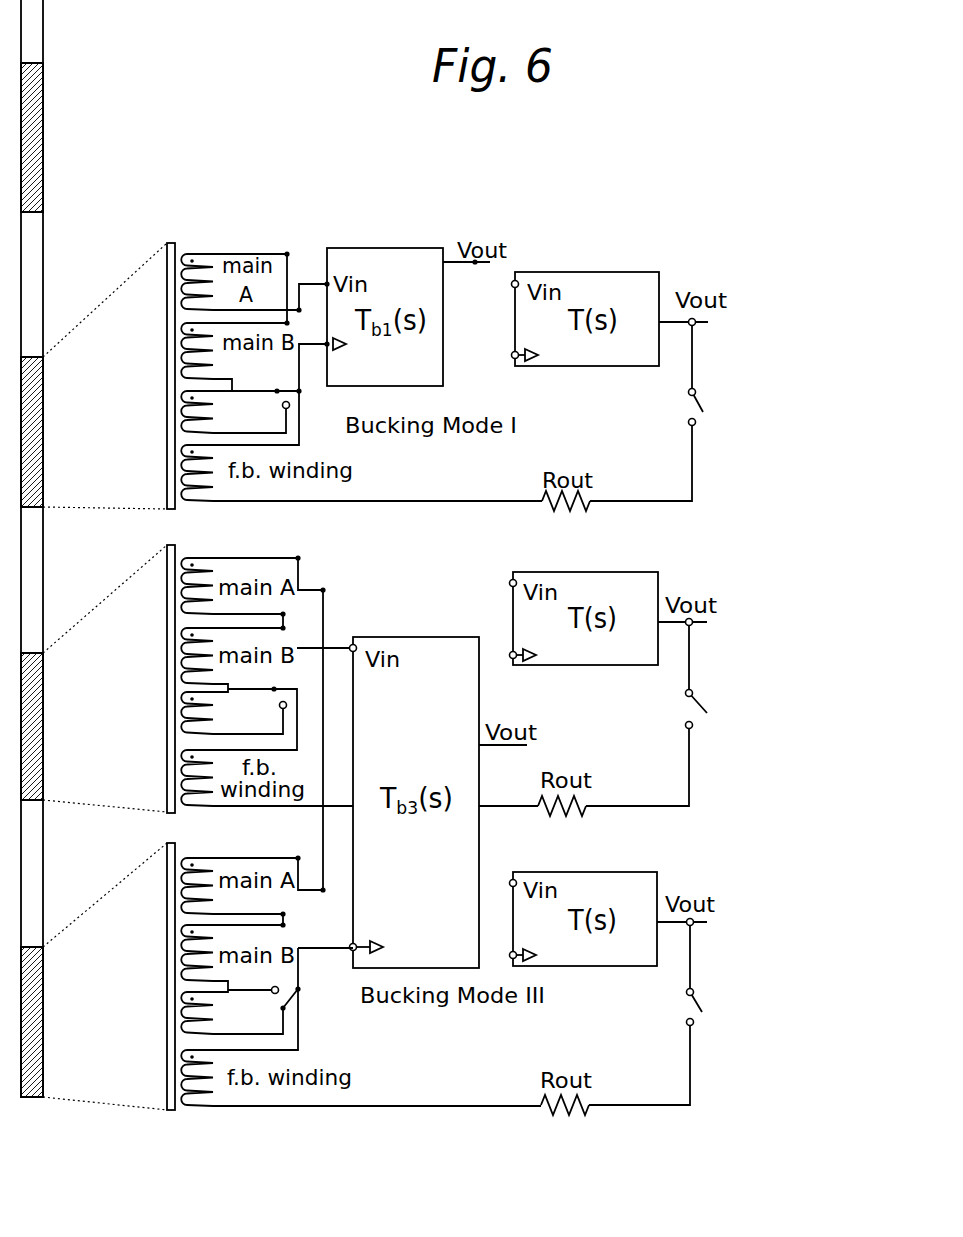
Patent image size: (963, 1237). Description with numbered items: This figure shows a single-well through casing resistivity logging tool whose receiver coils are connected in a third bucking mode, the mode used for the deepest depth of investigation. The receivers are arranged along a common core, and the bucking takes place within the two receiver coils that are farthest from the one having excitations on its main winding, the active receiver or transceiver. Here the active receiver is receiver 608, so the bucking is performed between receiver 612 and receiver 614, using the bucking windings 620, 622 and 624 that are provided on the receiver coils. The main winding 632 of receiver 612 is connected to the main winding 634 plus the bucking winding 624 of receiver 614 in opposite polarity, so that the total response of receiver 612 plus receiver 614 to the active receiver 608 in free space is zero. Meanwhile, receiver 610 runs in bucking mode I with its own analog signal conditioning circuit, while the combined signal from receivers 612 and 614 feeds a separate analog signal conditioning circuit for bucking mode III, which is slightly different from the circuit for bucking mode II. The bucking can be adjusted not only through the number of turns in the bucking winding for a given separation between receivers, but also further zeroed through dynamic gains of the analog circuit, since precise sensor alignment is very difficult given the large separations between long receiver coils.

The receiver 608 is at (36, 124).
The receiver 610 is at (143, 408).
The receiver 612 is at (148, 692).
The receiver 614 is at (148, 993).
The bucking winding 620 is at (167, 410).
The bucking winding 622 is at (175, 732).
The bucking winding 624 is at (175, 1034).
The main winding 632 is at (163, 558).
The main winding 634 is at (163, 855).